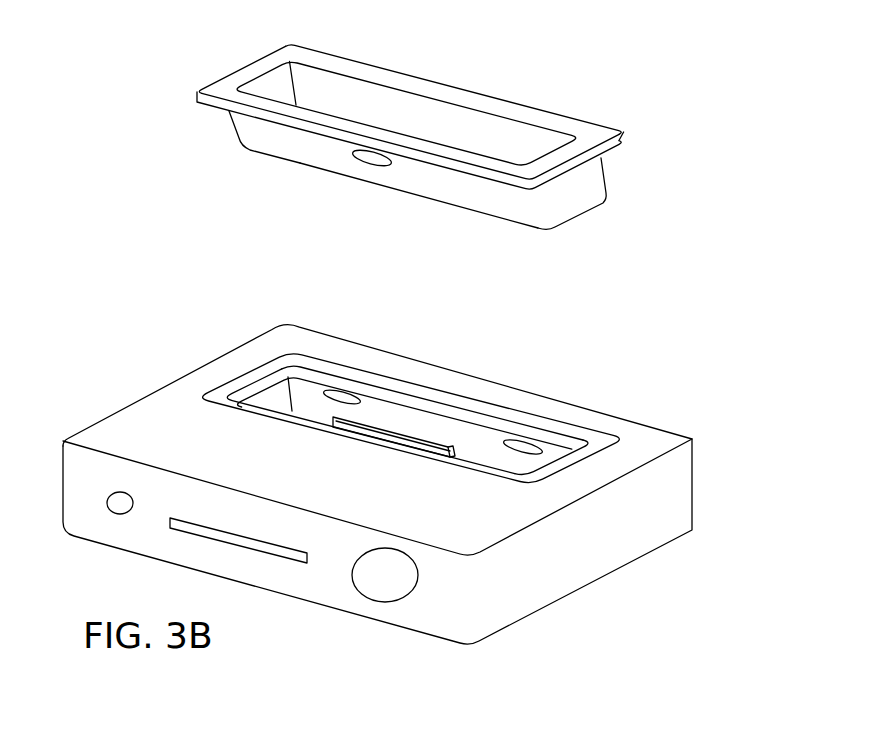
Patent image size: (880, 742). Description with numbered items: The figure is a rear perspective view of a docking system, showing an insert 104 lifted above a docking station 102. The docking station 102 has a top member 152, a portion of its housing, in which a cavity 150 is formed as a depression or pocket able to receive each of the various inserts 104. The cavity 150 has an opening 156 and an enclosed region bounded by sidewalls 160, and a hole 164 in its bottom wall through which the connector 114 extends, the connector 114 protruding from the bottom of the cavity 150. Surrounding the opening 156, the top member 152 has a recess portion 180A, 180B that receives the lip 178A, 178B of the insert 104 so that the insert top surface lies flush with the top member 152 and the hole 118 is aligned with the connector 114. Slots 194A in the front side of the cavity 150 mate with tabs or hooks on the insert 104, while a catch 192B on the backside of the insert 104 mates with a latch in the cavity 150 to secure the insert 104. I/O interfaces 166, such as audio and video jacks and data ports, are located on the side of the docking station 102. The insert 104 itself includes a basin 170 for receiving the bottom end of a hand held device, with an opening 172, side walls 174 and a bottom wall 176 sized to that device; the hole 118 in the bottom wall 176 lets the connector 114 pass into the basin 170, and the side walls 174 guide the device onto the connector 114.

The docking station 102 is at (693, 482).
The insert 104 is at (624, 131).
The connector 114 is at (413, 436).
The hole 118 is at (360, 181).
The cavity 150 is at (263, 414).
The top member 152 is at (103, 439).
The opening 156 is at (300, 370).
The sidewalls 160 is at (560, 453).
The hole 164 is at (460, 435).
The I/O interfaces 166 is at (140, 538).
The basin 170 is at (246, 152).
The opening 172 is at (266, 72).
The side walls 174 is at (483, 125).
The bottom wall 176 is at (560, 228).
The lip 178A is at (401, 73).
The lip 178B is at (224, 110).
The recess portion 180A is at (397, 392).
The recess portion 180B is at (258, 397).
The catch 192B is at (352, 157).
The slots 194A is at (340, 393).